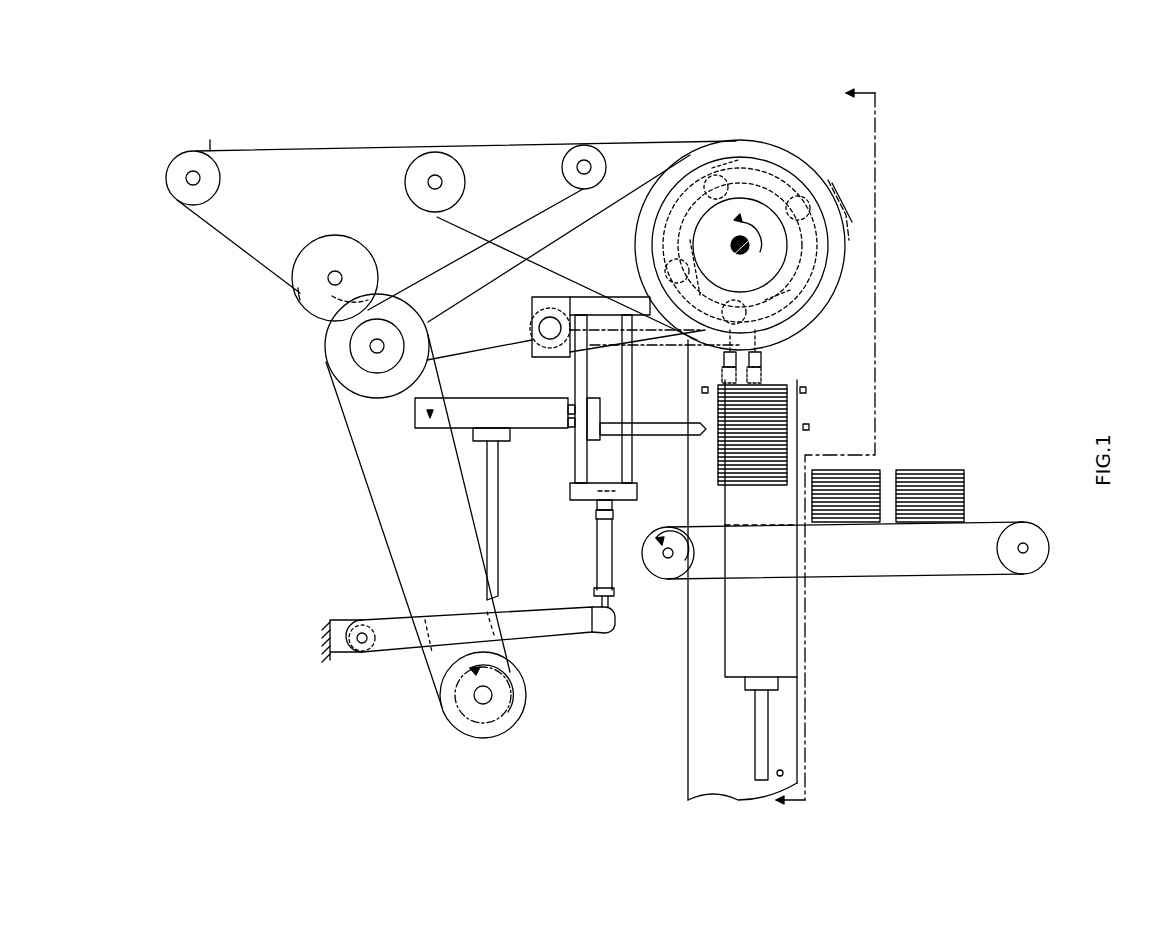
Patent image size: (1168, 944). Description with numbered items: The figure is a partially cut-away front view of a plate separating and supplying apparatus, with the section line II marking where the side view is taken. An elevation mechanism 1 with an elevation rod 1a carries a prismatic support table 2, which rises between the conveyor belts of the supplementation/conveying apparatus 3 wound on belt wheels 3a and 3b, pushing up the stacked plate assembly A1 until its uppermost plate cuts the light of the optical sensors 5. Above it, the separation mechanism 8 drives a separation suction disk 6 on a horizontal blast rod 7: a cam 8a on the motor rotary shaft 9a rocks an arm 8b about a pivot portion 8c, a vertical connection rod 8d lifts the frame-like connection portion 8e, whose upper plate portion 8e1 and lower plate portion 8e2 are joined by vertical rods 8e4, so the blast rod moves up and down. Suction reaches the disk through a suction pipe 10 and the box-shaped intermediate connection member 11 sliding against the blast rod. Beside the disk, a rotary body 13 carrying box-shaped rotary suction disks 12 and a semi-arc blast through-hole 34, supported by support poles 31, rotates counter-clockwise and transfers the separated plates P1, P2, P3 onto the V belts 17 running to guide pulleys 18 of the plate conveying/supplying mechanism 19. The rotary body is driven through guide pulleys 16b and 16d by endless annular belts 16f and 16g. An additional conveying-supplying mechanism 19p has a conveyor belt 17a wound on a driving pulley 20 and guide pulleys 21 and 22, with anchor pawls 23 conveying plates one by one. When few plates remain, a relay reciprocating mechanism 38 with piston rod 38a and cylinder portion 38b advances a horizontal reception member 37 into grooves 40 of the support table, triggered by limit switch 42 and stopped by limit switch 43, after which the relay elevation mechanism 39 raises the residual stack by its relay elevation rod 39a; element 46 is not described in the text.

The elevation mechanism 1 is at (720, 715).
The elevation rod 1a is at (762, 750).
The support table 2 is at (725, 656).
The supplementation/conveying apparatus 3 is at (905, 578).
The belt wheel 3a is at (664, 579).
The belt wheel 3b is at (1021, 574).
The optical sensor 5 is at (705, 387).
The separation suction disk 6 is at (735, 375).
The blast rod 7 is at (628, 318).
The separation mechanism 8 is at (602, 636).
The cam 8a is at (524, 682).
The arm 8b is at (457, 630).
The pivot portion 8c is at (363, 632).
The connection rod 8d is at (596, 560).
The frame-like connection portion 8e is at (632, 392).
The upper plate portion 8e1 is at (580, 340).
The lower plate portion 8e2 is at (572, 494).
The vertical rod 8e4 is at (625, 376).
The rotary shaft 9a is at (485, 700).
The suction pipe 10 is at (540, 329).
The intermediate connection member 11 is at (532, 300).
The rotary suction disk 12 is at (691, 159).
The rotary body 13 is at (774, 156).
The guide pulley 16b is at (350, 346).
The guide pulley 16d is at (355, 383).
The endless annular belt 16f is at (456, 361).
The endless annular belt 16g is at (398, 510).
The V belt 17 is at (648, 148).
The conveyor belt 17a is at (288, 148).
The guide pulley 18 is at (412, 180).
The plate conveying/supplying mechanism 19 is at (628, 128).
The additional conveying-supplying mechanism 19p is at (336, 131).
The driving pulley 20 is at (300, 290).
The guide pulley 21 is at (562, 170).
The guide pulley 22 is at (166, 178).
The anchor pawl 23 is at (385, 148).
The support pole 31 is at (692, 703).
The blast through-hole 34 is at (850, 255).
The horizontal reception member 37 is at (668, 430).
The relay reciprocating mechanism 38 is at (428, 432).
The piston rod 38a is at (570, 430).
The cylinder portion 38b is at (414, 413).
The relay elevation mechanism 39 is at (512, 596).
The relay elevation rod 39a is at (540, 565).
The groove 40 is at (760, 520).
The limit switch 42 is at (784, 773).
The limit switch 43 is at (902, 460).
The support 46 is at (632, 440).
The stacked plate assembly for separation A1 is at (718, 457).
The separated plate P1 is at (515, 148).
The separated plate P2 is at (704, 148).
The separated plate P3 is at (835, 190).
The section line II— II is at (835, 447).